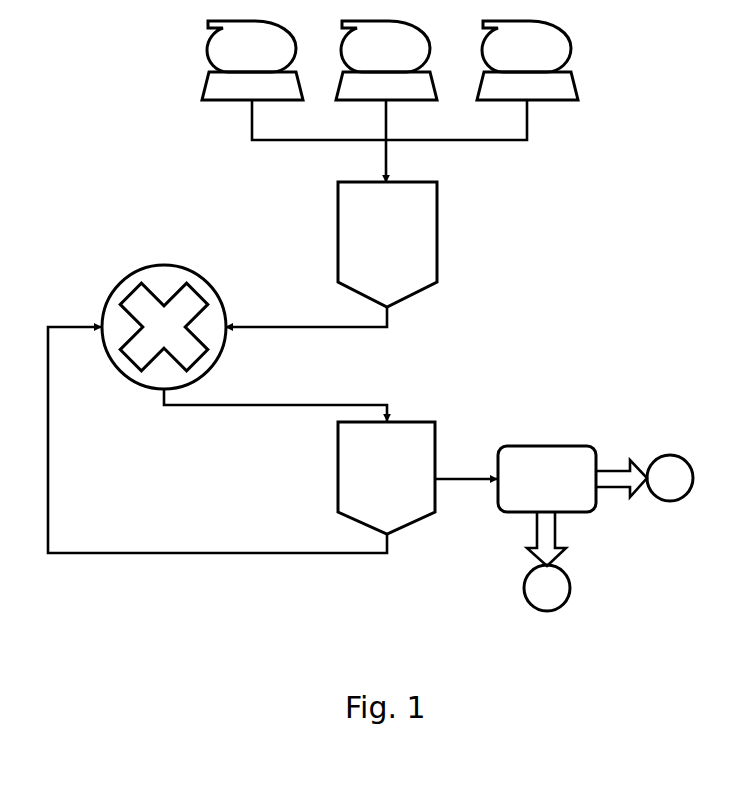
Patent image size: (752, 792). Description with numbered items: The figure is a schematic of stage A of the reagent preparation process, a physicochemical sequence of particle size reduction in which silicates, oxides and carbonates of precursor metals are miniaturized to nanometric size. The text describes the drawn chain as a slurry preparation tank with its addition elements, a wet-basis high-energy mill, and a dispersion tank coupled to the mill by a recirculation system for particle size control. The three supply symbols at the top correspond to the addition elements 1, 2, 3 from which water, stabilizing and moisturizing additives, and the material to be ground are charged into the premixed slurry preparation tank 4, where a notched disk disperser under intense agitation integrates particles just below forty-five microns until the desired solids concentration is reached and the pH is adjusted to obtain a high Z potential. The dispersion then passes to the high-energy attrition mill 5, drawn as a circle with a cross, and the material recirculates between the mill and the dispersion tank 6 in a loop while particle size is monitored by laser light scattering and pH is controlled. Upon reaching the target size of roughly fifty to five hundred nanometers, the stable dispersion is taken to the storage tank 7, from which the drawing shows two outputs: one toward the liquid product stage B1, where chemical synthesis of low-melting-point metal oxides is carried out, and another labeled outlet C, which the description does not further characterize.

The first feed material supply 1 is at (252, 60).
The second feed material supply 2 is at (386, 60).
The third feed material supply 3 is at (527, 60).
The first vessel 4 is at (387, 244).
The mixer 5 is at (164, 327).
The second vessel 6 is at (386, 478).
The separation unit 7 is at (547, 479).
The liquid product stage B1 is at (670, 478).
The product output C is at (547, 588).